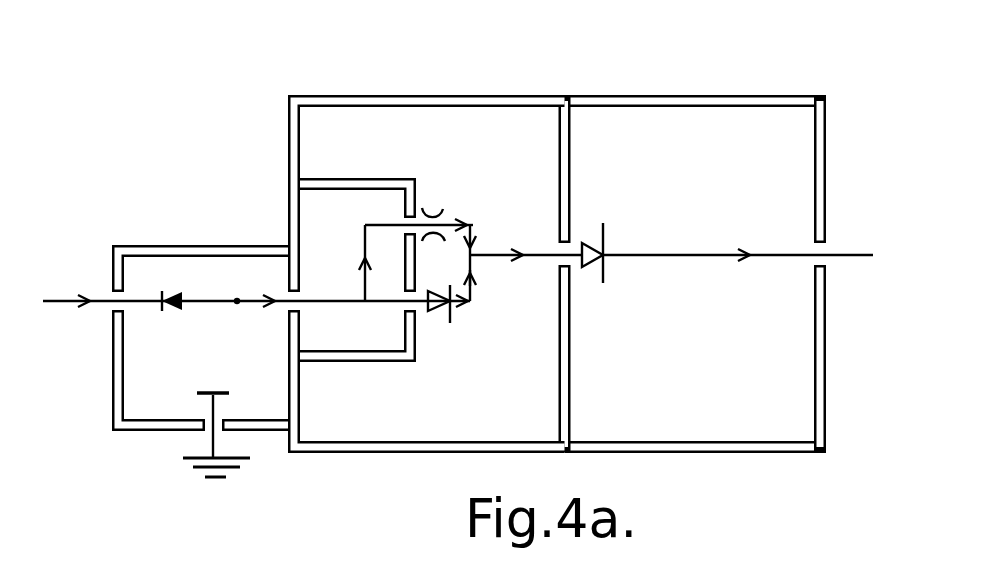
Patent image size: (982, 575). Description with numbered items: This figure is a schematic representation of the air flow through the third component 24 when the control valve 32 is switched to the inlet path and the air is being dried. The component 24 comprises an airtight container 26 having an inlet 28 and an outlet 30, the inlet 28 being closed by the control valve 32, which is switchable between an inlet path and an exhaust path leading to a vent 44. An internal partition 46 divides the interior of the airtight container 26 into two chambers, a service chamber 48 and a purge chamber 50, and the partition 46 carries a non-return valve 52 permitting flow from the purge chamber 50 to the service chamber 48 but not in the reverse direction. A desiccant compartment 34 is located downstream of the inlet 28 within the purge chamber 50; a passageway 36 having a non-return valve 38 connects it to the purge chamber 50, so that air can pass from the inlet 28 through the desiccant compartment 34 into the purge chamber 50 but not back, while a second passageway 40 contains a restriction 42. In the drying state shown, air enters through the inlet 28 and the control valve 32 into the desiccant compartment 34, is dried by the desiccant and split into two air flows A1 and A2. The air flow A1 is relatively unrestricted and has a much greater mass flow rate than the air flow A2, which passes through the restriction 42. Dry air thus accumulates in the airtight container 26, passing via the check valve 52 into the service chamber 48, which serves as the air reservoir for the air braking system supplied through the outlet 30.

The third component 24 is at (553, 72).
The airtight container 26 is at (663, 97).
The inlet 28 is at (46, 306).
The outlet 30 is at (847, 258).
The control valve 32 is at (163, 246).
The desiccant compartment 34 is at (341, 362).
The passageway 36 is at (473, 303).
The non-return valve 38 is at (445, 324).
The second passageway 40 is at (470, 222).
The restriction 42 is at (437, 207).
The vent 44 is at (213, 441).
The internal partition 46 is at (571, 362).
The service chamber 48 is at (774, 112).
The purge chamber 50 is at (341, 112).
The non-return valve 52 is at (605, 240).
The air flow A1 is at (477, 279).
The air flow A2 is at (476, 225).